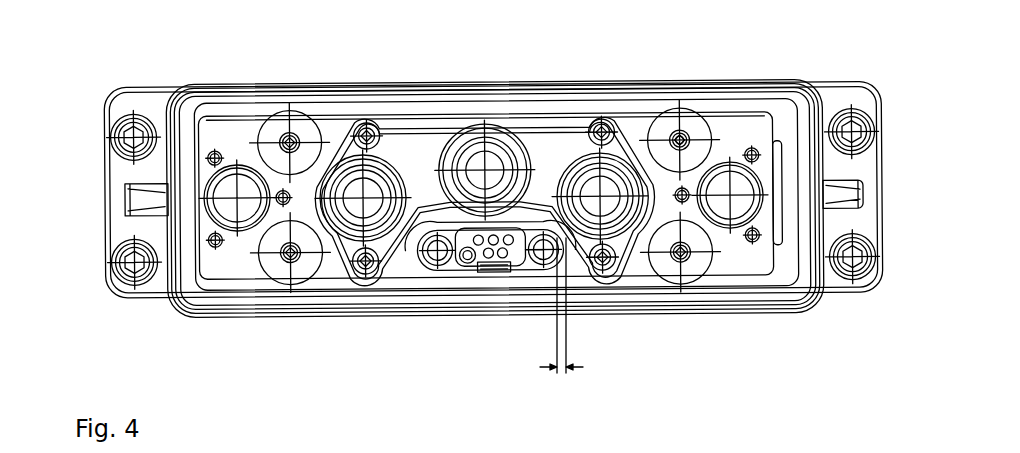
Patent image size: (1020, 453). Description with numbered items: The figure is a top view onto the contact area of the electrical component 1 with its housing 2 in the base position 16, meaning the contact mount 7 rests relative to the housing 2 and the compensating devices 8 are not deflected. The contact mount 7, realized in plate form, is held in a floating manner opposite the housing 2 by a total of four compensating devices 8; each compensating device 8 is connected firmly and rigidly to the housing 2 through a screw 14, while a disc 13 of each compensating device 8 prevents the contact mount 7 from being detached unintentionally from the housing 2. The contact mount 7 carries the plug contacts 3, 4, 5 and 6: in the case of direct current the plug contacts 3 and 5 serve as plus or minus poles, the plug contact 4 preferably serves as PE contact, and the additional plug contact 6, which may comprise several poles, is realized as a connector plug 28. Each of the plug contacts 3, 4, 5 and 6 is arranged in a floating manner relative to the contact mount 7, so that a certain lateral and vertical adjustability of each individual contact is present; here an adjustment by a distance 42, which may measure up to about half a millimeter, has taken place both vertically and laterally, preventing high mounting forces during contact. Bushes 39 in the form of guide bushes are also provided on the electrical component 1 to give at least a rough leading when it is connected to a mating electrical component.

The electrical component 1 is at (130, 65).
The housing 2 is at (107, 128).
The plug contact 3 is at (352, 250).
The plug contact 4 is at (473, 155).
The plug contact 5 is at (577, 263).
The additional plug contact 6 is at (492, 273).
The contact mount 7 is at (215, 267).
The compensating device 8 is at (290, 133).
The disc 13 is at (662, 268).
The screw 14 is at (681, 128).
The base position 16 is at (108, 81).
The connector plug 28 is at (466, 270).
The bush 39 is at (230, 167).
The distance 42 is at (555, 343).